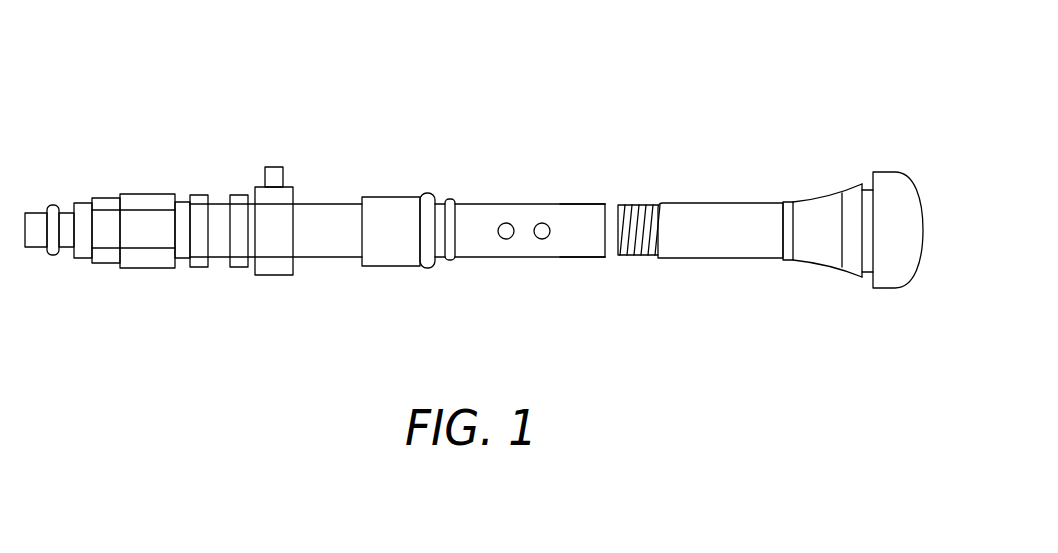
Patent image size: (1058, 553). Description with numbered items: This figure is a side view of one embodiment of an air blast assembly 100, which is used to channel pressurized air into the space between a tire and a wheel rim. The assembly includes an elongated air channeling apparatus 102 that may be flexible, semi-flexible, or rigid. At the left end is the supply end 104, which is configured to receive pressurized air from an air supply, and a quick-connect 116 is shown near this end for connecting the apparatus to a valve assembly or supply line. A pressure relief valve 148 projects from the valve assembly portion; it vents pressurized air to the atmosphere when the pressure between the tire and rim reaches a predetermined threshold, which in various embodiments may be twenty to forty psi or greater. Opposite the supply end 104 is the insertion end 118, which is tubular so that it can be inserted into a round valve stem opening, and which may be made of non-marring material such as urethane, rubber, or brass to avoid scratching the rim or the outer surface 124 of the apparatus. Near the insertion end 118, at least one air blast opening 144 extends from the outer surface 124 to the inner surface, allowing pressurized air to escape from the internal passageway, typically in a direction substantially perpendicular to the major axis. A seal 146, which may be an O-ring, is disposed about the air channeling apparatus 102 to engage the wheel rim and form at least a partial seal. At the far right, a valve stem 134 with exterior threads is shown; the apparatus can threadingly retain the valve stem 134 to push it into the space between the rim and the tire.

The air blast assembly 100 is at (779, 75).
The air channeling apparatus 102 is at (398, 185).
The supply end 104 is at (37, 257).
The quick-connect 116 is at (100, 192).
The insertion end 118 is at (596, 263).
The outer surface 124 is at (536, 203).
The valve stem 134 is at (715, 203).
The air blast opening 144 is at (506, 233).
The seal 146 is at (447, 262).
The pressure relief valve 148 is at (272, 166).